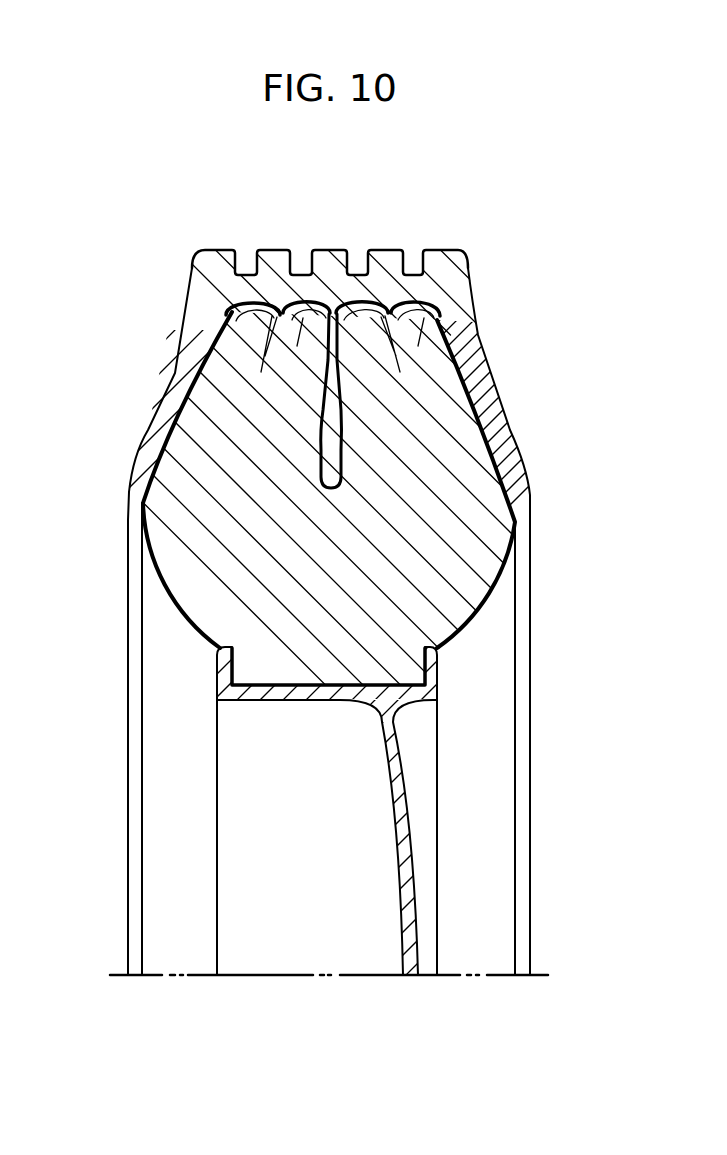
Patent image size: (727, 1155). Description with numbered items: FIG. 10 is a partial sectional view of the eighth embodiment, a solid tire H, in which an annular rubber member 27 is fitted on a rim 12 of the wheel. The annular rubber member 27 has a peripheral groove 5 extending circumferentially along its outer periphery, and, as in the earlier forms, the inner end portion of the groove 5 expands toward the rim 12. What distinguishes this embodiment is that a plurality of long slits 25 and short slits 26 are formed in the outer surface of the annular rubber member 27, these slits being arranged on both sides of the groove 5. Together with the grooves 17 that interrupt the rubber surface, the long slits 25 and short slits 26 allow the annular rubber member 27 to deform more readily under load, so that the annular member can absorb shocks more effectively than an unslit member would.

The solid tire H is at (178, 283).
The grooves 17 is at (384, 249).
The annular rubber member 27 is at (428, 582).
The long slits 25 is at (266, 343).
The short slits 26 is at (368, 340).
The peripheral groove 5 is at (334, 452).
The rim 12 is at (436, 678).